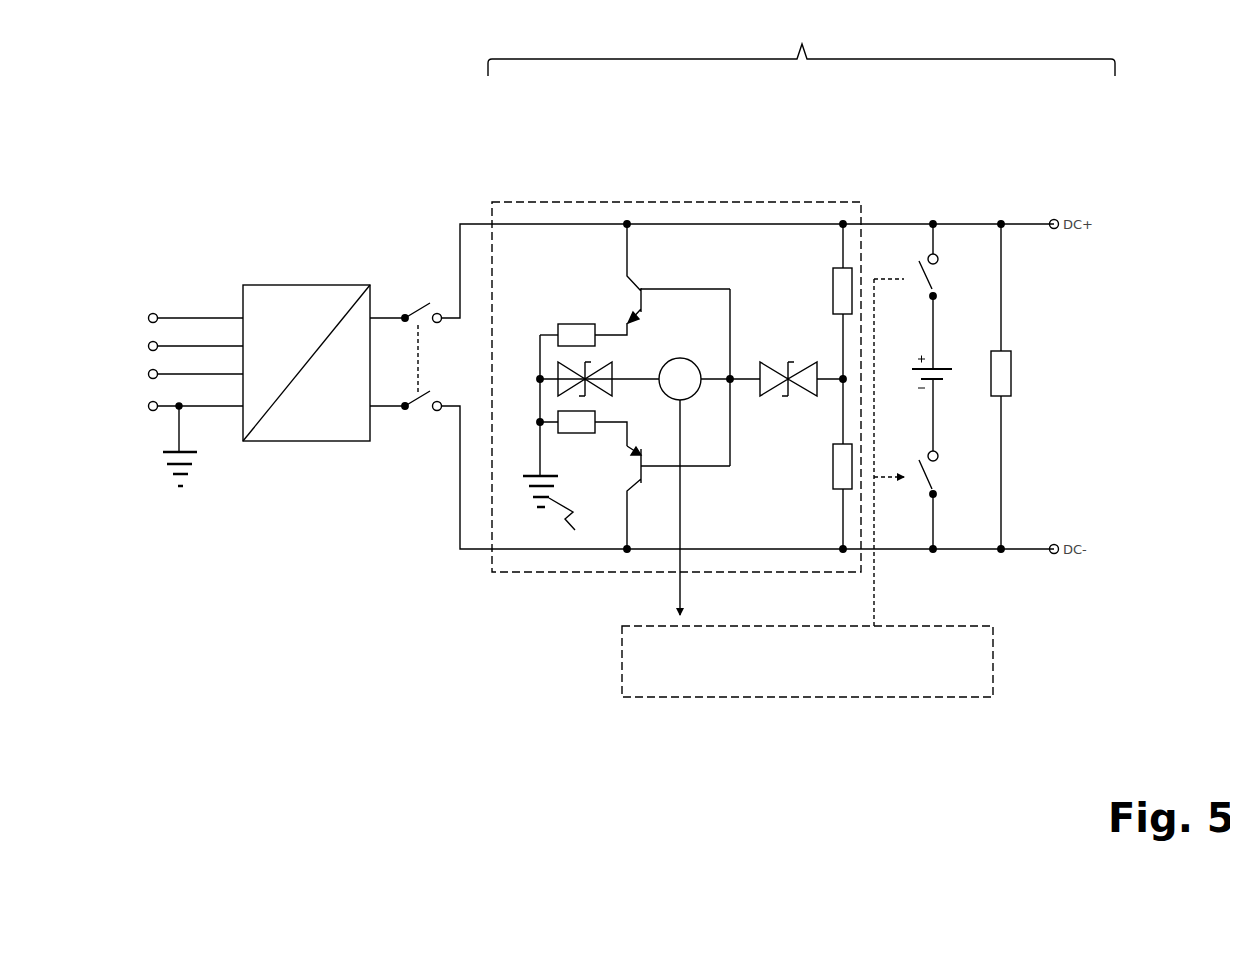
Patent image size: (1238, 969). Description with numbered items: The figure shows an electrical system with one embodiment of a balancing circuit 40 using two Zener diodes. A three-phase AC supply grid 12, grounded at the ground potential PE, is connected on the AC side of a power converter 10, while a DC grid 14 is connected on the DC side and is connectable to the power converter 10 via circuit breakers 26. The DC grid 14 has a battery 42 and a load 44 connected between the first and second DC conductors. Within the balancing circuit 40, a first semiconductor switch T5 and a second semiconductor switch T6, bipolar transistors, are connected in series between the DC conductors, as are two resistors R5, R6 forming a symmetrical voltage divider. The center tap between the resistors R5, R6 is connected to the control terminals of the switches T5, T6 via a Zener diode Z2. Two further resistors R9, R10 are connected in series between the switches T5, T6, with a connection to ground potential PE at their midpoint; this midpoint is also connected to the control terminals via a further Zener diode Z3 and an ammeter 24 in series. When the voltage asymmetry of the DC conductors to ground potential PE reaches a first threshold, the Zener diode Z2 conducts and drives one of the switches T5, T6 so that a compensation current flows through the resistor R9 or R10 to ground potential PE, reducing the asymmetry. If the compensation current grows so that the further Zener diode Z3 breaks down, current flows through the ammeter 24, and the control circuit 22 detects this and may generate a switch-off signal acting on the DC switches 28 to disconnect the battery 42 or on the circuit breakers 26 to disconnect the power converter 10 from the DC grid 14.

The three-phase AC supply grid 12 is at (155, 304).
The power converter 10 is at (306, 286).
The circuit breakers 26 is at (431, 305).
The DC grid 14 is at (801, 42).
The balancing circuit 40 is at (694, 201).
The ammeter 24 is at (693, 360).
The control circuit 22 is at (797, 681).
The battery 42 is at (940, 373).
The load 44 is at (1012, 375).
The DC switches 28 is at (933, 488).
The resistor R5 is at (832, 282).
The resistor R6 is at (832, 470).
The resistor R9 is at (568, 325).
The resistor R10 is at (570, 437).
The first semiconductor switch T5 is at (632, 297).
The second semiconductor switch T6 is at (640, 484).
The Zener diode Z2 is at (789, 375).
The further Zener diode Z3 is at (620, 376).
The ground potential PE is at (181, 487).